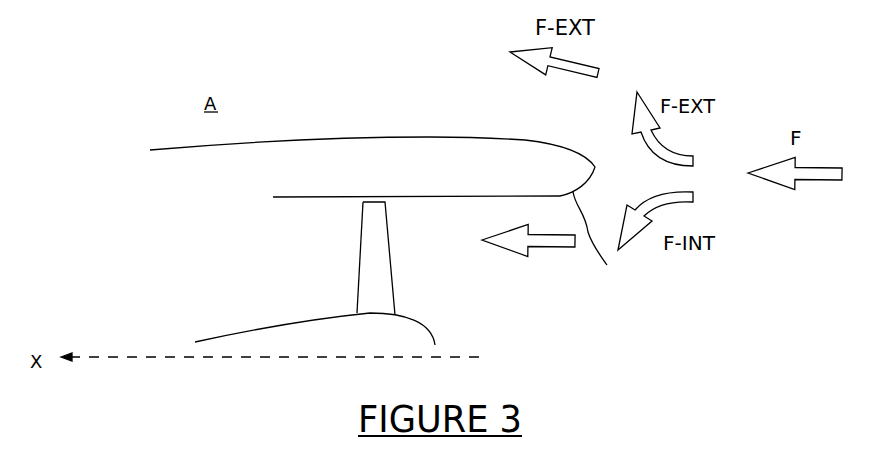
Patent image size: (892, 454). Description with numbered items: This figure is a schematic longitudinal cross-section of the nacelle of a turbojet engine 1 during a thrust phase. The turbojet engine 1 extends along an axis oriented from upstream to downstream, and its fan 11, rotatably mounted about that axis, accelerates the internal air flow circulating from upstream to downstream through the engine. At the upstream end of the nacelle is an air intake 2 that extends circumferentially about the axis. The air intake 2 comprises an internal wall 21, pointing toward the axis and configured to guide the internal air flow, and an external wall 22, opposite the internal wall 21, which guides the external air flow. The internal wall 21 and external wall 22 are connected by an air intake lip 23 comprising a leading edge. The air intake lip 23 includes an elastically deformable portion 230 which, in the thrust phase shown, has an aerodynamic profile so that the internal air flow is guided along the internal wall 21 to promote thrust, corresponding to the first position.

The turbojet engine 1 is at (120, 238).
The fan 11 is at (362, 258).
The air intake 2 is at (468, 120).
The internal wall 21 is at (417, 198).
The external wall 22 is at (527, 140).
The air intake lip 23 is at (593, 163).
The elastically deformable portion 230 is at (600, 242).